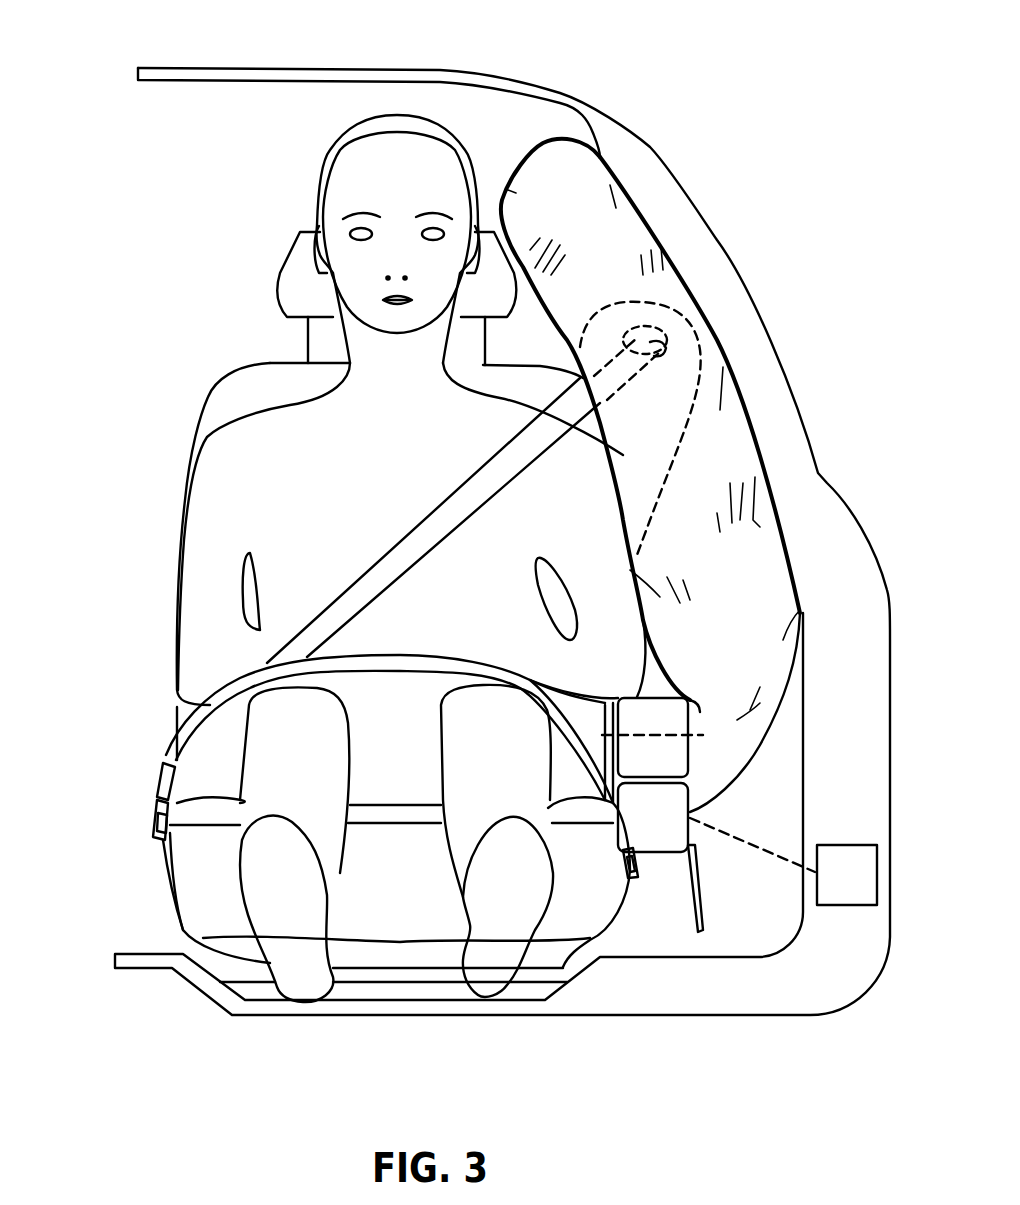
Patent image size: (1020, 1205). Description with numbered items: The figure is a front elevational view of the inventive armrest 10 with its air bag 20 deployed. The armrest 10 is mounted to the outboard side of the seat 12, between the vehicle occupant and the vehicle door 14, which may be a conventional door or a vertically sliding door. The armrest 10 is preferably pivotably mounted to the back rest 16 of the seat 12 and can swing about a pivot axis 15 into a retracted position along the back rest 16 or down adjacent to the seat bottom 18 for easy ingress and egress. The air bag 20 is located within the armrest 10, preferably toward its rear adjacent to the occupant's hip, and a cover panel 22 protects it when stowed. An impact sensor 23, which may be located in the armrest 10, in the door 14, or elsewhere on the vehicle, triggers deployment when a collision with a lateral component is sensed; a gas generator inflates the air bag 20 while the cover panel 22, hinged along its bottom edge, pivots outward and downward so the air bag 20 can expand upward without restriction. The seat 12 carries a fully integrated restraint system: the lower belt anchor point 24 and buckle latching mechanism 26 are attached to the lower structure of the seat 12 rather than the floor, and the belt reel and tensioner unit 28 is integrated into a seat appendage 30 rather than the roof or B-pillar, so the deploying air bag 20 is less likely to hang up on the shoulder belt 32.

The armrest 10 is at (667, 777).
The seat 12 is at (125, 722).
The vehicle door 14 is at (877, 600).
The pivot axis 15 is at (645, 737).
The back rest 16 is at (210, 395).
The seat bottom 18 is at (383, 900).
The air bag 20 is at (543, 153).
The cover panel 22 is at (703, 900).
The impact sensor 23 is at (861, 892).
The lower belt anchor point 24 is at (635, 880).
The buckle latching mechanism 26 is at (153, 847).
The belt reel and tensioner unit 28 is at (652, 332).
The seat appendage 30 is at (697, 320).
The shoulder belt 32 is at (460, 490).